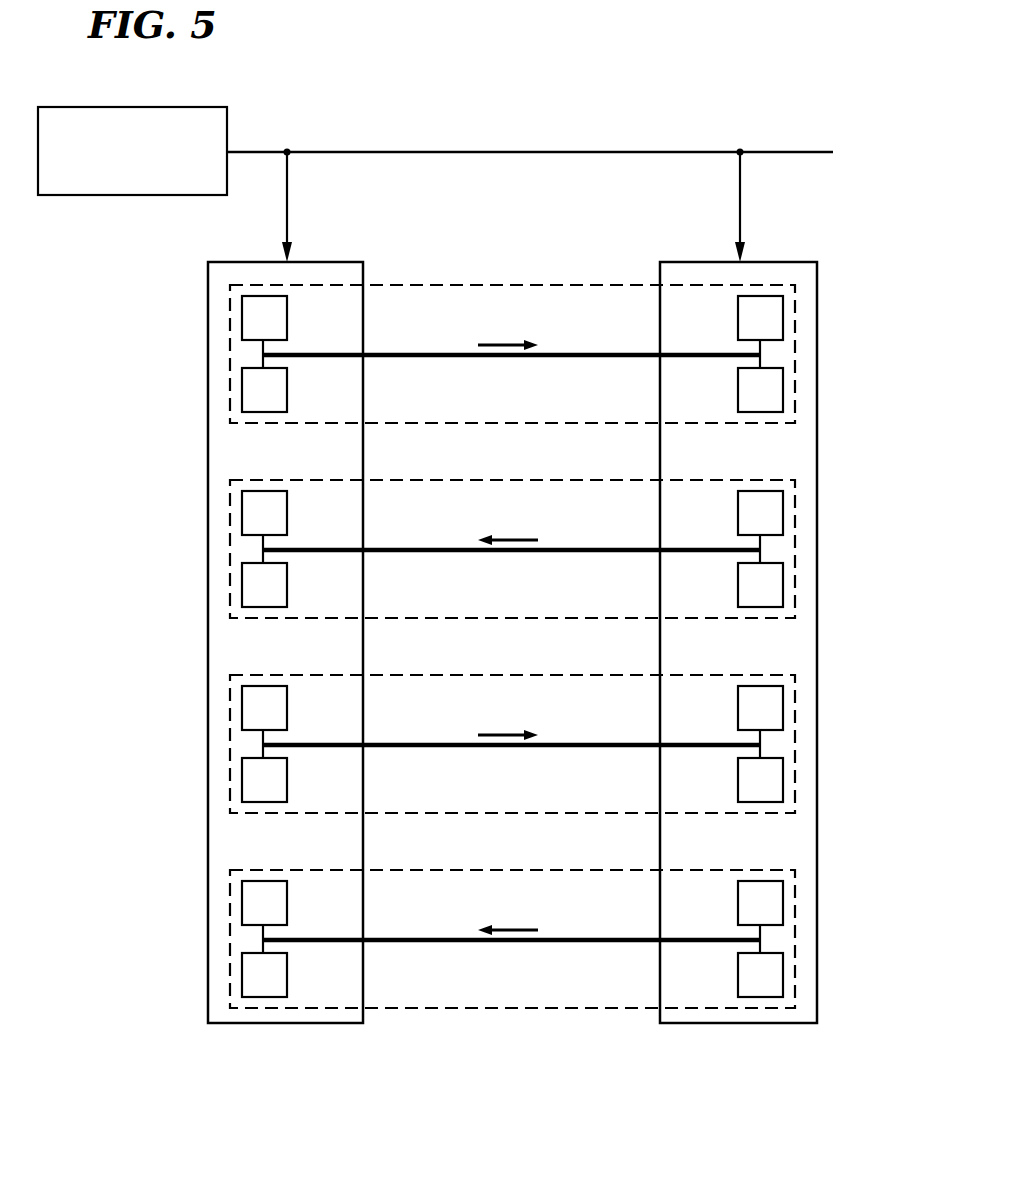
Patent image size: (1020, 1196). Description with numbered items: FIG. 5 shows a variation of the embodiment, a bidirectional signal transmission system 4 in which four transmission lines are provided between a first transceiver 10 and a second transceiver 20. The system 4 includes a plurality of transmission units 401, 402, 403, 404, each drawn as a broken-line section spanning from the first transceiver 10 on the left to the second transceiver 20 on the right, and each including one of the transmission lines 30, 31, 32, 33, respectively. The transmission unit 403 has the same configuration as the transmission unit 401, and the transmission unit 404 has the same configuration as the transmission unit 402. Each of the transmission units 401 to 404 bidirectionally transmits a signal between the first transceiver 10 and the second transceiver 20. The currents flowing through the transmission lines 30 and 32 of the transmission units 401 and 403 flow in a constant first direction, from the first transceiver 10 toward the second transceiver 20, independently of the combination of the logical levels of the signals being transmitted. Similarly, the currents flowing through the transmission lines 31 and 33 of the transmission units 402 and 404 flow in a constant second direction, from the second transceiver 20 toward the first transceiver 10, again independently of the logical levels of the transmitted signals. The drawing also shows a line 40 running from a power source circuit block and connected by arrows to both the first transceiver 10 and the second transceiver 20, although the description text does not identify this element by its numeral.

The bidirectional signal transmission system 4 is at (550, 658).
The first transceiver 10 is at (338, 262).
The second transceiver 20 is at (693, 262).
The transmission line 30 is at (593, 355).
The transmission line 31 is at (568, 550).
The transmission line 32 is at (572, 745).
The transmission line 33 is at (580, 940).
The power supply line 40 is at (543, 152).
The transmission unit 401 is at (561, 354).
The transmission unit 402 is at (561, 549).
The transmission unit 403 is at (561, 744).
The transmission unit 404 is at (561, 939).